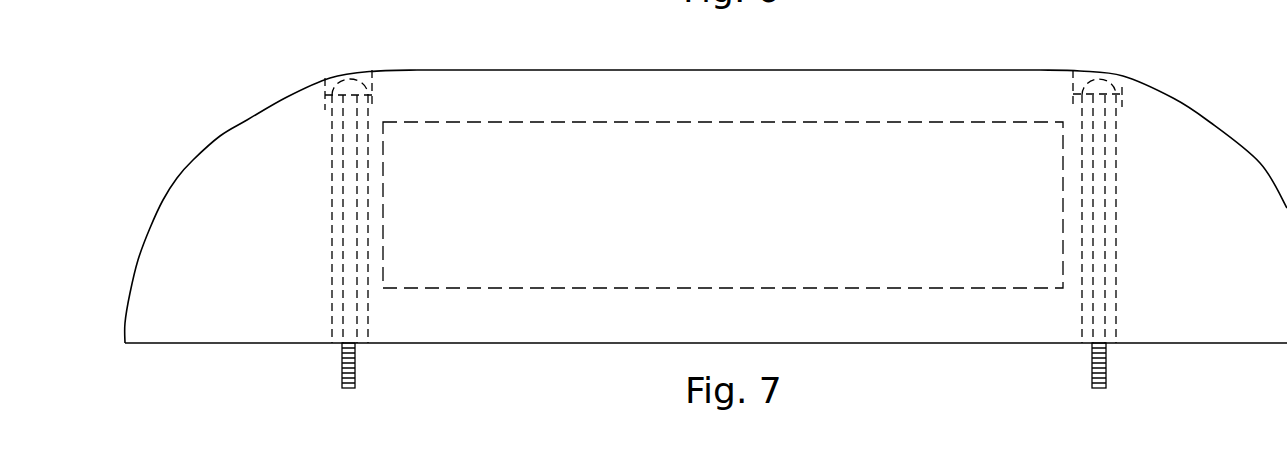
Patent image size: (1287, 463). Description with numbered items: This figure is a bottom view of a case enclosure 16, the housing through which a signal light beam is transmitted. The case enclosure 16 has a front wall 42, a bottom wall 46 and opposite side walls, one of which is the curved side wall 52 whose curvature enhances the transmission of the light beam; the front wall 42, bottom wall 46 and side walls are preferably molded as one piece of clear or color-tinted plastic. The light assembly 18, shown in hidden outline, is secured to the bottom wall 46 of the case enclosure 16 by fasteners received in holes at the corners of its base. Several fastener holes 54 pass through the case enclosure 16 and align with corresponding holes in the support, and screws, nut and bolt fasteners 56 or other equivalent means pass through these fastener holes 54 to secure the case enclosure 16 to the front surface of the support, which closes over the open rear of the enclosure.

The case enclosure 16 is at (706, 173).
The light assembly 18 is at (800, 118).
The front wall 42 is at (505, 69).
The bottom wall 46 is at (583, 85).
The side wall 52 is at (196, 158).
The fastener holes 54 is at (345, 66).
The fasteners 56 is at (355, 370).